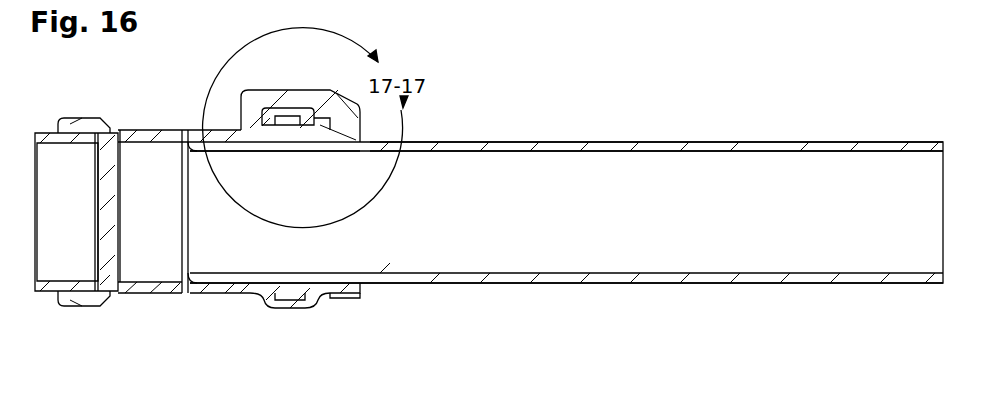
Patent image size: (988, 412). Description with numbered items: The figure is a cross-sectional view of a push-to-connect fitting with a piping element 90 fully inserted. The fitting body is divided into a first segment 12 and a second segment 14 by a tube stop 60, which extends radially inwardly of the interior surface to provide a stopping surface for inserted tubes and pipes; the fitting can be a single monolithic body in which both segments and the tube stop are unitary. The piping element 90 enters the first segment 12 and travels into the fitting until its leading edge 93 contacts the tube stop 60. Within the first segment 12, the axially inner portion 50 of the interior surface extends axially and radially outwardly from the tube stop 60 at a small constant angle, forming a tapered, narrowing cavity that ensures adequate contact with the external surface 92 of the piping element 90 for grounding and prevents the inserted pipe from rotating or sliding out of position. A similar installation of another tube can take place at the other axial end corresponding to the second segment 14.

The first segment 12 is at (197, 127).
The second segment 14 is at (139, 131).
The axially inner portion 50 is at (213, 283).
The tube stop 60 is at (184, 276).
The piping or tubing element 90 is at (837, 151).
The external surface 92 is at (770, 142).
The leading edge 93 is at (184, 140).